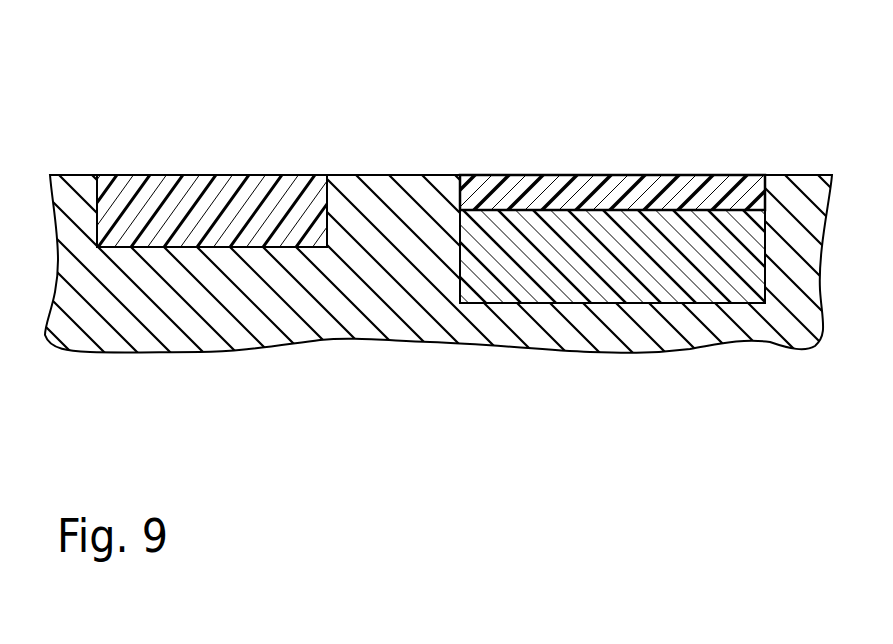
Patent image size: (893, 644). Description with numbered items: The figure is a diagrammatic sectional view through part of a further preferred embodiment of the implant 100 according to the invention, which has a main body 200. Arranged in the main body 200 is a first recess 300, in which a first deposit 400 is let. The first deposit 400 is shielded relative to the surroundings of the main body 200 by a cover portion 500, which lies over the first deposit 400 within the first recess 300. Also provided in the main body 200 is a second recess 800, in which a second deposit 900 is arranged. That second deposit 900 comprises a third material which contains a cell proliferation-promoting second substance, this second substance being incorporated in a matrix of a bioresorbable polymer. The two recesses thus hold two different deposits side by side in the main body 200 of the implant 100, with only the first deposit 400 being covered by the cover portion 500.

The implant 100 is at (446, 243).
The main body 200 is at (403, 310).
The first recess 300 is at (767, 238).
The first deposit 400 is at (608, 258).
The cover portion 500 is at (633, 195).
The second recess 800 is at (95, 194).
The second deposit 900 is at (212, 210).